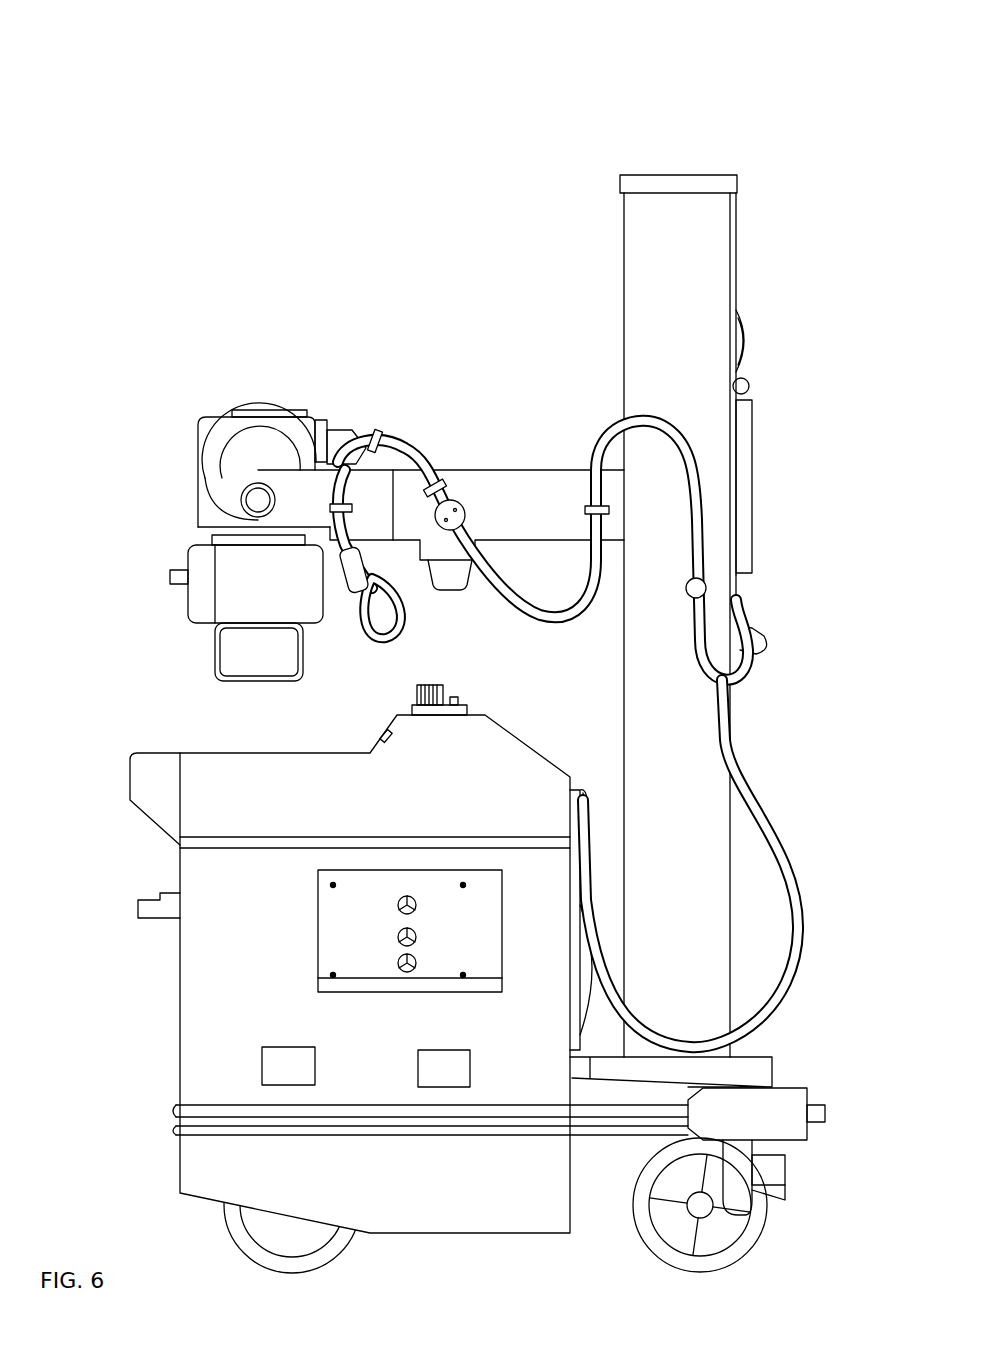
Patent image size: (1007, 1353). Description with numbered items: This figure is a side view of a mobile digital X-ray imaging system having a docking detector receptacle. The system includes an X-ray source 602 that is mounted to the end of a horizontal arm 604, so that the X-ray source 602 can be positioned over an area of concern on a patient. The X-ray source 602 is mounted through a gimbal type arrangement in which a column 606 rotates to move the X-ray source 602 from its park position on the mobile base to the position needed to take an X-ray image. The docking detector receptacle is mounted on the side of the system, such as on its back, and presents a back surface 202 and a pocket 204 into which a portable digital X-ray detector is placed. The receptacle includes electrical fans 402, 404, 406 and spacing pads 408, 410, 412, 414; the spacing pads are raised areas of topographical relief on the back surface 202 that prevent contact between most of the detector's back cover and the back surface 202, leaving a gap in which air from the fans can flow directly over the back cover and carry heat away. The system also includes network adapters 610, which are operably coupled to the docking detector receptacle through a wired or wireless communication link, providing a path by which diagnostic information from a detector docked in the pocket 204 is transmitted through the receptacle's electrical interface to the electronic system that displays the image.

The back surface 202 is at (340, 870).
The pocket 204 is at (390, 992).
The electrical fan 402 is at (407, 896).
The electrical fan 404 is at (416, 937).
The electrical fan 406 is at (400, 970).
The spacing pad 408 is at (333, 885).
The spacing pad 410 is at (333, 975).
The spacing pad 412 is at (463, 885).
The spacing pad 414 is at (463, 975).
The X-ray source 602 is at (240, 465).
The horizontal arm 604 is at (536, 475).
The column 606 is at (715, 250).
The network adapters 610 is at (418, 1072).